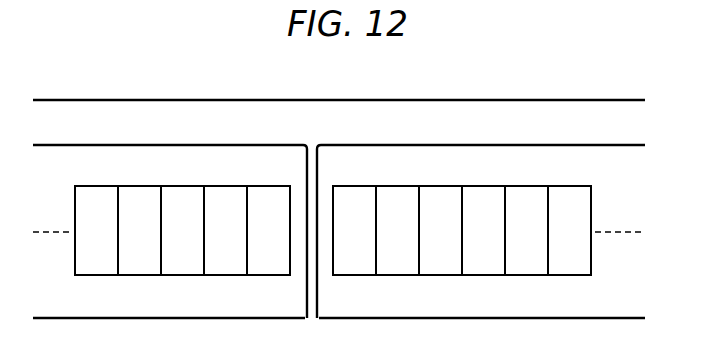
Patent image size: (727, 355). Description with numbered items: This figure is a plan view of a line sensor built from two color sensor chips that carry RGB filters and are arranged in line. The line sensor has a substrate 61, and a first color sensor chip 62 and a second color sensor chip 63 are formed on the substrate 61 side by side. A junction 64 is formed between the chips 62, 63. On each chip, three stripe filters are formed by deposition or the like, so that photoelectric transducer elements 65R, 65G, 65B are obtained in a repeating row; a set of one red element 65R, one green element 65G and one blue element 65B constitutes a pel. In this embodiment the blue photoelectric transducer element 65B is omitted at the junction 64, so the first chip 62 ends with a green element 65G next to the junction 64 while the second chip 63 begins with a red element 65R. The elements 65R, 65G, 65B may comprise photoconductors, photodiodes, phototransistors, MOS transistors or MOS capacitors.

The substrate 61 is at (578, 91).
The first color sensor chip 62 is at (45, 144).
The second color sensor chip 63 is at (332, 153).
The junction 64 is at (313, 142).
The red photoelectric transducer element 65R is at (98, 185).
The green photoelectric transducer element 65G is at (142, 185).
The blue photoelectric transducer element 65B is at (186, 185).